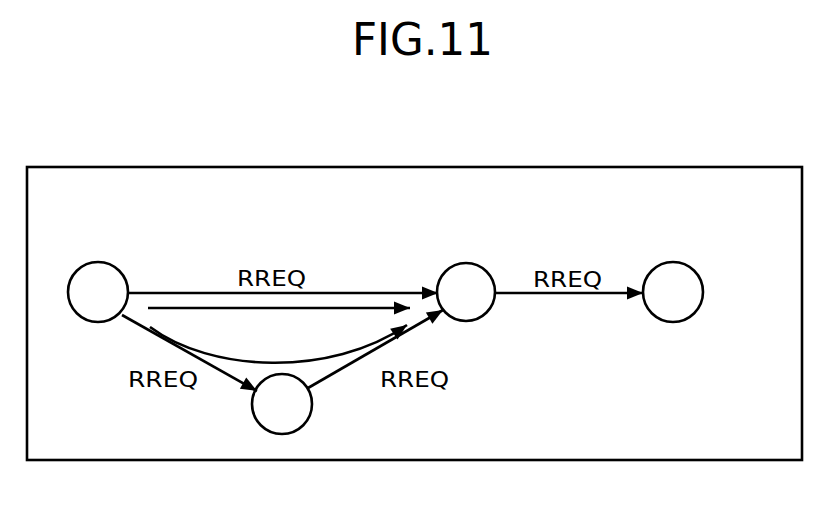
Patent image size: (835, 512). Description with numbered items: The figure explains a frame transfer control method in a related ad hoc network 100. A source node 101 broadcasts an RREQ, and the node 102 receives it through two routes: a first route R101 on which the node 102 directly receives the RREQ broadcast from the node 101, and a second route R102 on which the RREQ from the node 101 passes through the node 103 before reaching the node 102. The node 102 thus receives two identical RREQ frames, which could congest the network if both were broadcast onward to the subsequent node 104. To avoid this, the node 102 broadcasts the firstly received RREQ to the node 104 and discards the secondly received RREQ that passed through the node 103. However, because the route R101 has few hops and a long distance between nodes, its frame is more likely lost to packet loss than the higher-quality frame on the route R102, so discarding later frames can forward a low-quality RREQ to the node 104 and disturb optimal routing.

The ad hoc network 100 is at (345, 167).
The source node 101 is at (104, 266).
The node 102 is at (470, 266).
The node 103 is at (312, 403).
The subsequent node 104 is at (677, 264).
The route R101 is at (366, 307).
The route R102 is at (337, 357).